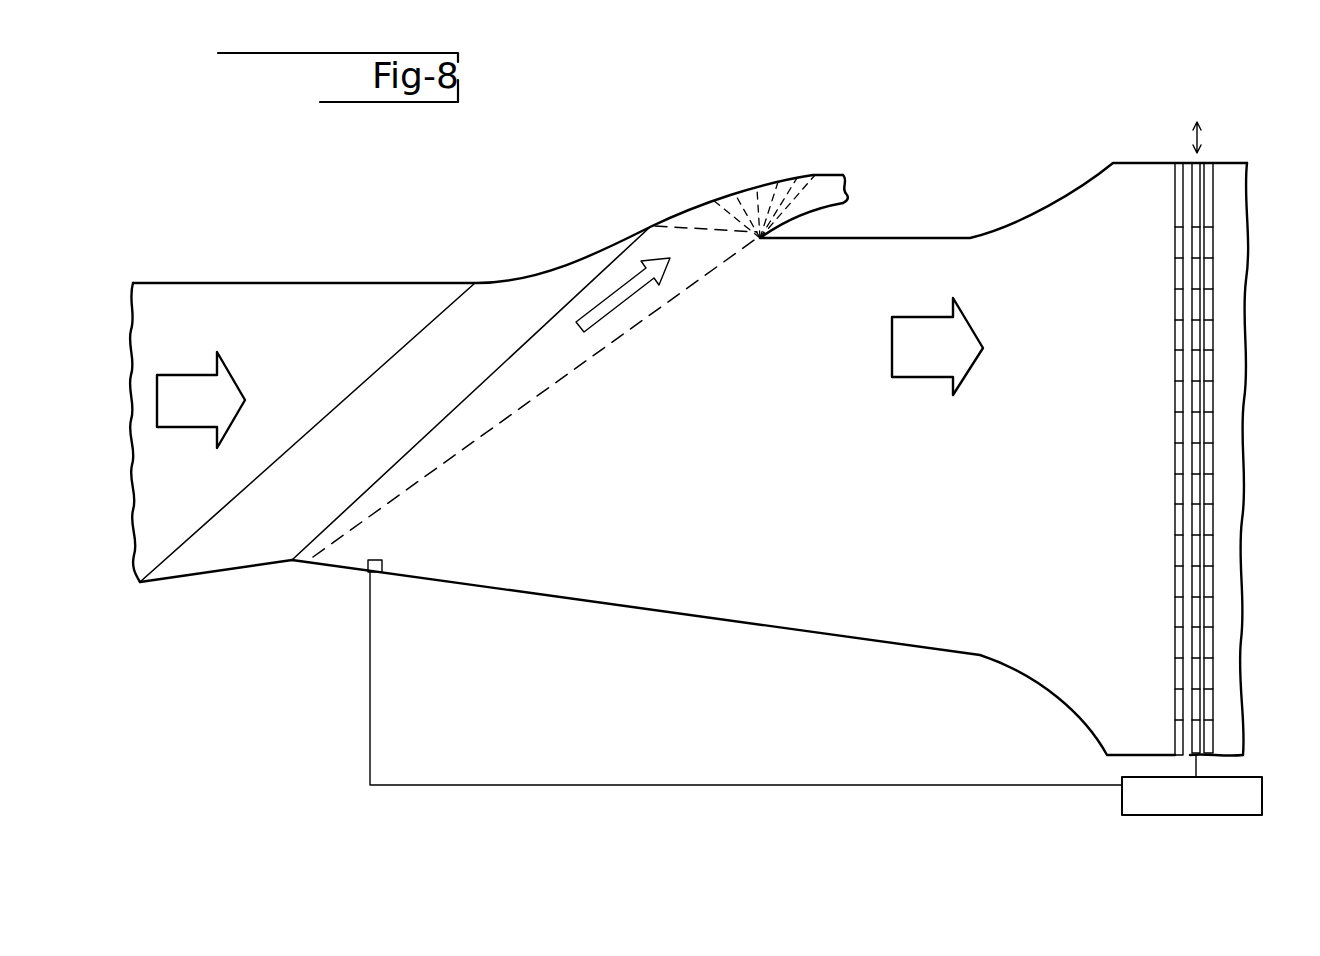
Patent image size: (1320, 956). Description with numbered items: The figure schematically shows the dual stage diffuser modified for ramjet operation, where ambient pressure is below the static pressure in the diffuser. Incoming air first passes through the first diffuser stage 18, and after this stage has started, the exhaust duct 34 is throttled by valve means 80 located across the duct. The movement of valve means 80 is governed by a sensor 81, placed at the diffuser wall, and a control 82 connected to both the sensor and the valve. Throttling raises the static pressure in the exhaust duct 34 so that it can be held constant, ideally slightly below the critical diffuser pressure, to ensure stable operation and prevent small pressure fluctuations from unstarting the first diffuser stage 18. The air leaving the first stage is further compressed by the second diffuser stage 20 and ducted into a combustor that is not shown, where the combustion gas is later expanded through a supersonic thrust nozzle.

The first diffuser stage 18 is at (360, 392).
The second diffuser stage 20 is at (738, 192).
The exhaust duct 34 is at (986, 438).
The valve means 80 is at (1200, 162).
The sensor 81 is at (383, 562).
The control 82 is at (1188, 815).